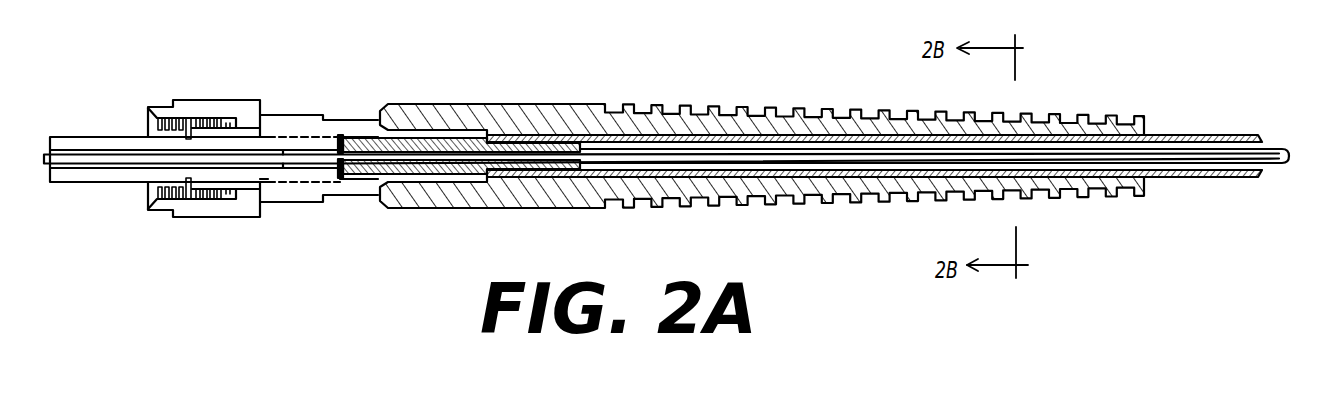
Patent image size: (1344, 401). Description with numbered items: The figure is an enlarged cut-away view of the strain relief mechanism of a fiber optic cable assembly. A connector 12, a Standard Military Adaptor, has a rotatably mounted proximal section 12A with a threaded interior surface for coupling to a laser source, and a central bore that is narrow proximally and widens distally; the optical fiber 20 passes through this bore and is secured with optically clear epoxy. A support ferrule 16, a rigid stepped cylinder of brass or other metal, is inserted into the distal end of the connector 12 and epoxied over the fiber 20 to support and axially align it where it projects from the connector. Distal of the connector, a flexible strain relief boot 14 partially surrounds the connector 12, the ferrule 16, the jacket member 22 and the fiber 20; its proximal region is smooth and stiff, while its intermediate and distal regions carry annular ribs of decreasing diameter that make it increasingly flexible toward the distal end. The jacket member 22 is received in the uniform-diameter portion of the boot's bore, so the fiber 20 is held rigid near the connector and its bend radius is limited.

The proximal section 12A is at (192, 100).
The connector 12 is at (283, 123).
The strain relief boot 14 is at (522, 112).
The support ferrule 16 is at (363, 174).
The optical fiber 20 is at (1277, 158).
The jacket member 22 is at (1200, 133).